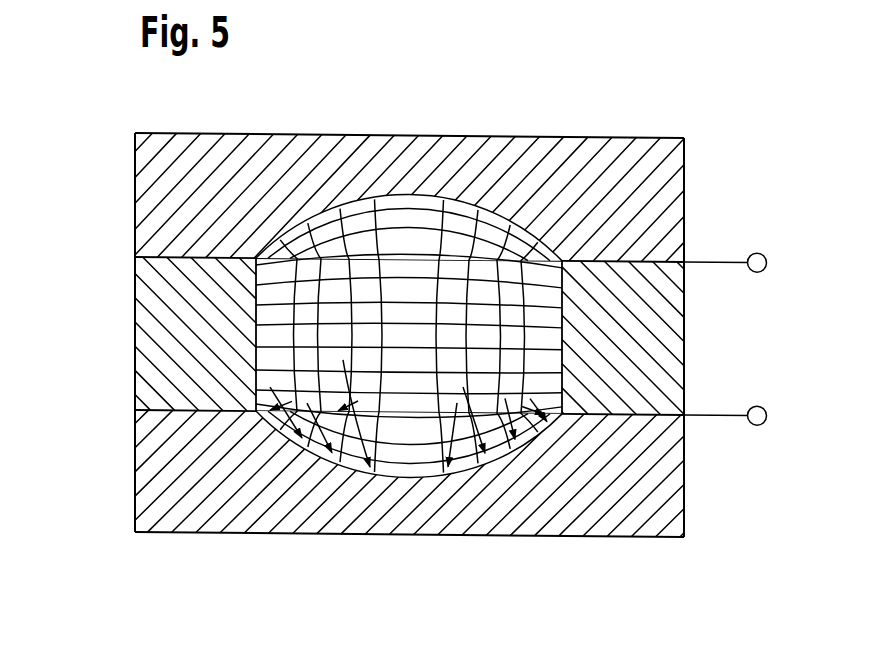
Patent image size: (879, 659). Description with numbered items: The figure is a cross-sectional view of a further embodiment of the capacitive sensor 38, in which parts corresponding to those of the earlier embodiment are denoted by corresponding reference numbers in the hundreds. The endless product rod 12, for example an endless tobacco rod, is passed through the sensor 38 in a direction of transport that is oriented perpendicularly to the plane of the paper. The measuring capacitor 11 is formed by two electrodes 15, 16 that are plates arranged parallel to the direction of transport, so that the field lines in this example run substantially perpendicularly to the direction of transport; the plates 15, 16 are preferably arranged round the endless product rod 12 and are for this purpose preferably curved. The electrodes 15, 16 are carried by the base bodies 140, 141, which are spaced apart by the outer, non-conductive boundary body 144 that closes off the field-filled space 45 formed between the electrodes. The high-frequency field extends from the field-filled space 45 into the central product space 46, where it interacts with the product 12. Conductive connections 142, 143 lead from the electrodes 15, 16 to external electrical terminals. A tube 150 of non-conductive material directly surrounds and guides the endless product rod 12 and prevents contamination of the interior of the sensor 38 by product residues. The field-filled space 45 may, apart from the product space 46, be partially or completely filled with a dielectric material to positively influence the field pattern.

The measuring capacitor 11 is at (508, 183).
The endless product rod 12 is at (362, 472).
The electrode 15 is at (352, 205).
The electrode 16 is at (446, 468).
The sensor 38 is at (713, 495).
The field-filled space 45 is at (527, 428).
The product space 46 is at (486, 455).
The base body 140 is at (157, 198).
The base body 141 is at (157, 472).
The conductive connection 142 is at (632, 262).
The conductive connection 143 is at (628, 417).
The boundary body 144 is at (157, 320).
The tube 150 is at (275, 412).